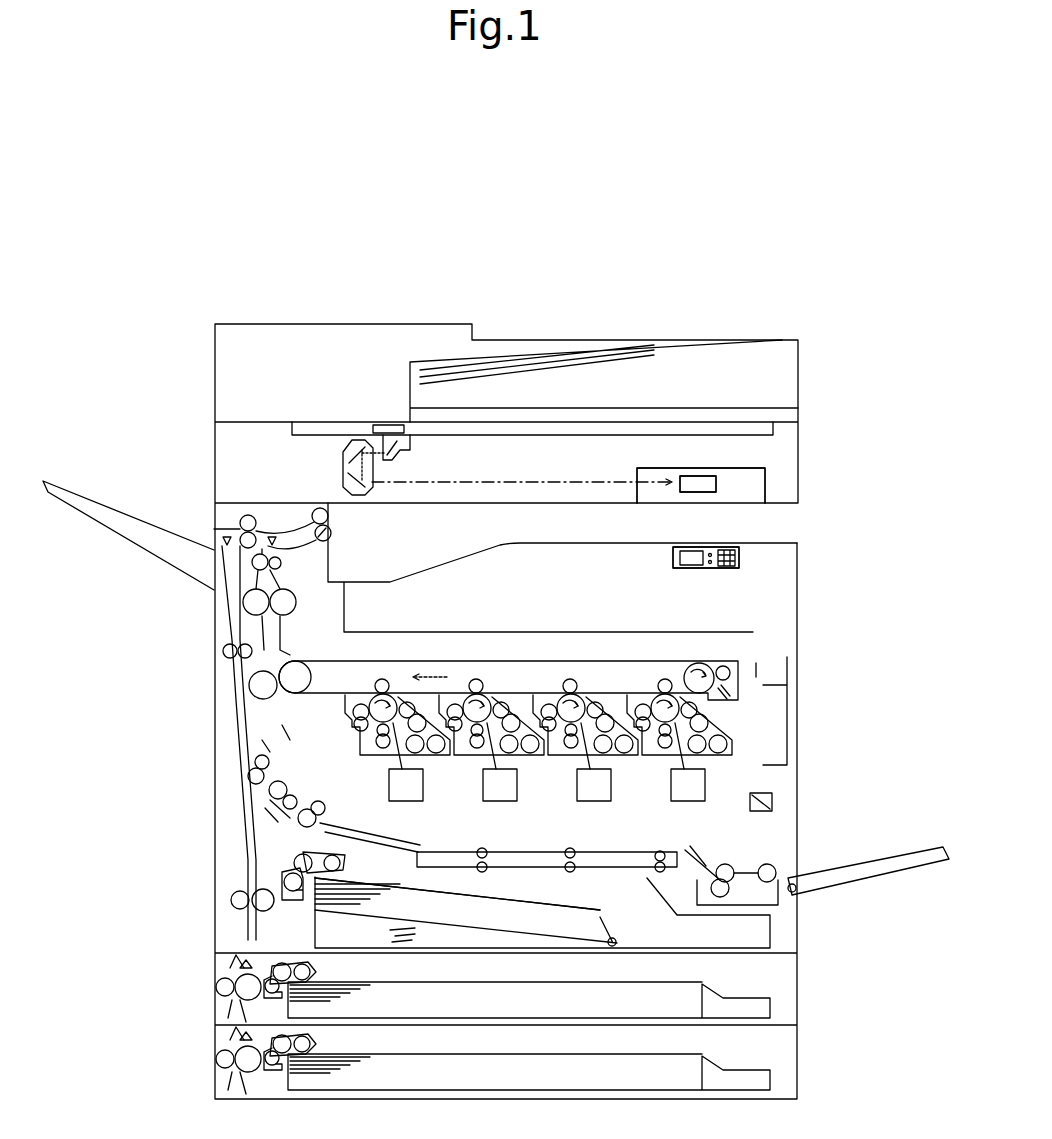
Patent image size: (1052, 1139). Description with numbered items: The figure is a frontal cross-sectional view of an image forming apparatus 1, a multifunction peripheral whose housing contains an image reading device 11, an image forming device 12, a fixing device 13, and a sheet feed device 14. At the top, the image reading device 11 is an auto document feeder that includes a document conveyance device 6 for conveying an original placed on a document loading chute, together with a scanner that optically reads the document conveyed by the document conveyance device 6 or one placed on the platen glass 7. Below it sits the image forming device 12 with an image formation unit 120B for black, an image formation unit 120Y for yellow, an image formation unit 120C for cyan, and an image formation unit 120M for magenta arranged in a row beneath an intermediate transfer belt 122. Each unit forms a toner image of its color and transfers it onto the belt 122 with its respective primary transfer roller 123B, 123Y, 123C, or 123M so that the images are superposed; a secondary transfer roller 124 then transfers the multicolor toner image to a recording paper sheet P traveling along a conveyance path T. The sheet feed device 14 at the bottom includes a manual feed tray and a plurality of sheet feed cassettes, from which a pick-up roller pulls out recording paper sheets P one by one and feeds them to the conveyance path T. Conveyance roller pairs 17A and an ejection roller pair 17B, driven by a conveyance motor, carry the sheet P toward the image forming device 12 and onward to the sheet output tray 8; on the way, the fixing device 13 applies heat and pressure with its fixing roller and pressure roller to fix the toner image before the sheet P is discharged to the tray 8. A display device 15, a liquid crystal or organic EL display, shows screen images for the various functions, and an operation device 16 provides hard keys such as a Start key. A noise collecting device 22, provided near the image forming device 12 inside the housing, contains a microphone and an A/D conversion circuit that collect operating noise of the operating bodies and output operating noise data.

The image forming apparatus 1 is at (495, 257).
The document conveyance device 6 is at (587, 321).
The platen glass 7 is at (653, 432).
The sheet output tray 8 is at (437, 566).
The image reading device 11 is at (204, 454).
The image forming device 12 is at (772, 727).
The fixing device 13 is at (234, 607).
The sheet feed device 14 is at (778, 986).
The display device 15 is at (683, 548).
The operation device 16 is at (739, 560).
The conveyance roller pairs 17A is at (322, 770).
The ejection roller pair 17B is at (333, 534).
The noise collecting device 22 is at (772, 802).
The intermediate transfer belt 122 is at (707, 660).
The primary transfer roller for magenta 123M is at (382, 679).
The primary transfer roller for cyan 123C is at (476, 679).
The primary transfer roller for yellow 123Y is at (570, 679).
The primary transfer roller for black 123B is at (665, 679).
The image formation unit for magenta 120M is at (412, 810).
The image formation unit for cyan 120C is at (506, 810).
The image formation unit for yellow 120Y is at (600, 810).
The image formation unit for black 120B is at (694, 810).
The secondary transfer roller 124 is at (262, 683).
The conveyance path T is at (265, 828).
The recording paper sheet P is at (598, 900).